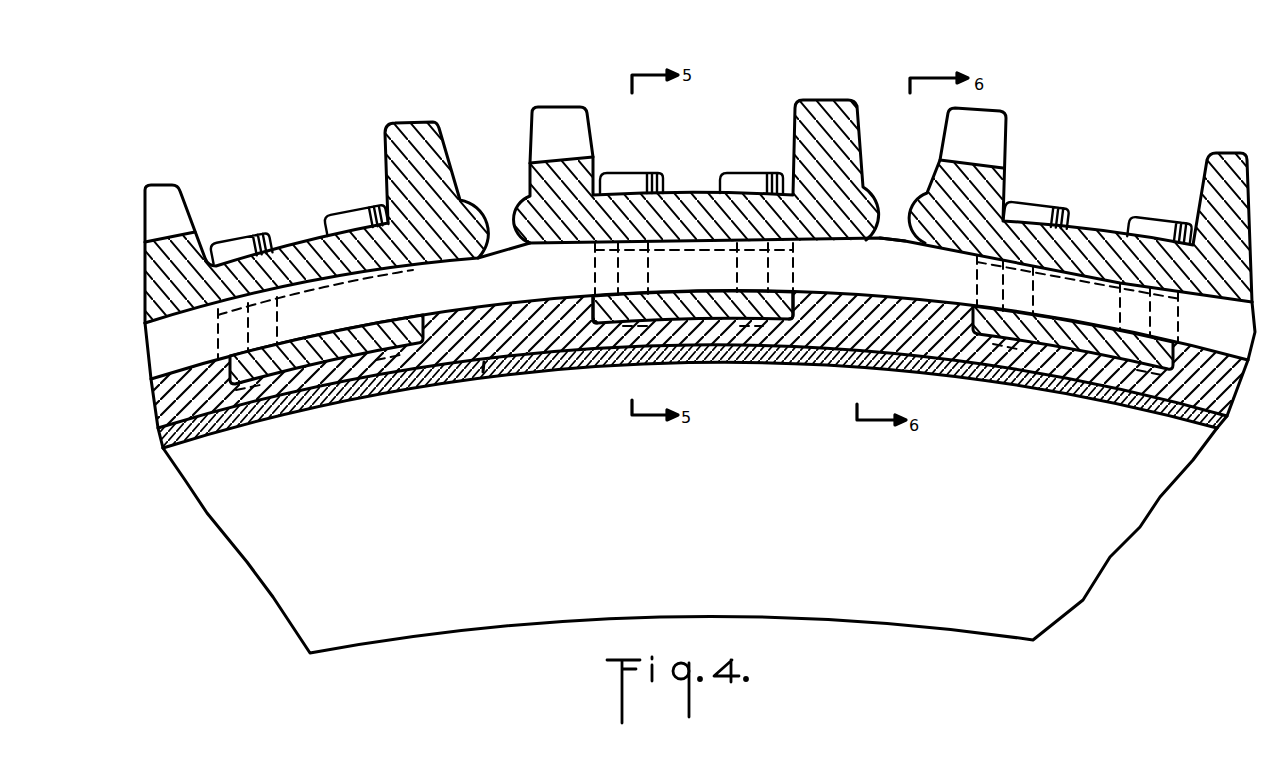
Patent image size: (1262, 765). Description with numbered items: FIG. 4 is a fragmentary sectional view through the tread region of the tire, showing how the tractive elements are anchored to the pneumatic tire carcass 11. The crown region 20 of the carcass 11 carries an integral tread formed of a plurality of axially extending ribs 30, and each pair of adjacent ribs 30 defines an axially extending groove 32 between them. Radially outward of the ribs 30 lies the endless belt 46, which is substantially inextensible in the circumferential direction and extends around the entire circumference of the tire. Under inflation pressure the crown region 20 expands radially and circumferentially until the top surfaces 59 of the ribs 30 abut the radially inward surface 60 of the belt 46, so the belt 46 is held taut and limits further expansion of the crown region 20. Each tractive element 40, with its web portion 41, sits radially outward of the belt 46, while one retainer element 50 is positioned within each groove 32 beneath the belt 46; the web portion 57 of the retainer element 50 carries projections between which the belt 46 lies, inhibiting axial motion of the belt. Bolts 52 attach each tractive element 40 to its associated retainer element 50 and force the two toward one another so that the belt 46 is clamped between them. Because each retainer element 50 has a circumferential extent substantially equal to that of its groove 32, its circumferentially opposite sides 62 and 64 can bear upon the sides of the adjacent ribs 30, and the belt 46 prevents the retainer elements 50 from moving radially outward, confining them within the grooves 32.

The pneumatic tire carcass 11 is at (522, 611).
The crown region 20 is at (773, 360).
The ribs 30 is at (538, 333).
The groove 32 is at (407, 335).
The tractive element 40 is at (785, 167).
The web portion 41 is at (688, 232).
The endless belt 46 is at (892, 283).
The retainer element 50 is at (670, 318).
The bolts 52 is at (724, 176).
The web portion 57 is at (1064, 327).
The top surfaces 59 is at (484, 362).
The radially inward surface 60 is at (511, 303).
The circumferentially opposite side 62 is at (807, 327).
The circumferentially opposite side 64 is at (592, 326).